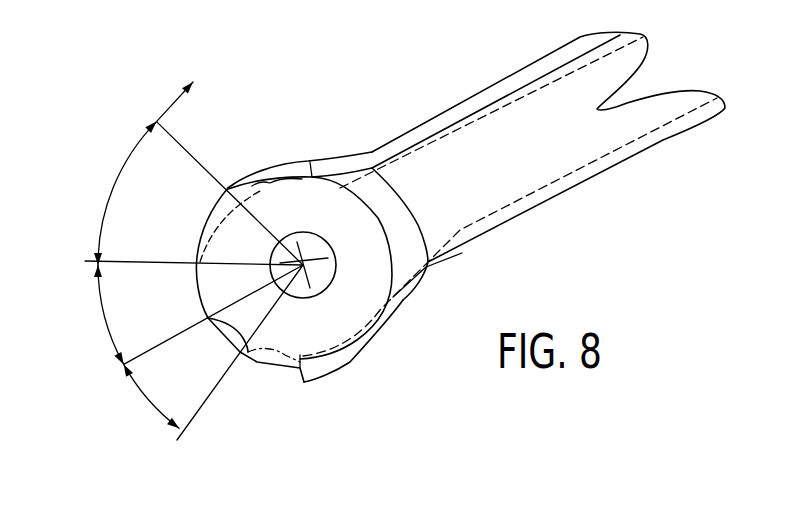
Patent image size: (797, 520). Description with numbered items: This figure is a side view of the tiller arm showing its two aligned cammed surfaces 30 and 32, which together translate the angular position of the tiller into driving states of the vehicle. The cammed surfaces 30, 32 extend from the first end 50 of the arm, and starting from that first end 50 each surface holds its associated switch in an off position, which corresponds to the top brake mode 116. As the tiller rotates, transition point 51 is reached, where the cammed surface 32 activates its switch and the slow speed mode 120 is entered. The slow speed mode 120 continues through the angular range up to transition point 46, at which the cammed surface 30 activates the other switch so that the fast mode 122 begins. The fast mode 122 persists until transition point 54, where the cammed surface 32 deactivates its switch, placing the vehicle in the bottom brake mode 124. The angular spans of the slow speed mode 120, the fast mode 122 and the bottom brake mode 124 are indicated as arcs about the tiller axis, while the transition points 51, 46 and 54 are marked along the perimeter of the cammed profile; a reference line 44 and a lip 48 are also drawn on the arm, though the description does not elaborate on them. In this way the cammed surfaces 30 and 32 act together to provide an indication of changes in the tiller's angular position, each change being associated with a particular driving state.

The cammed surface 30 is at (206, 346).
The cammed surface 32 is at (187, 228).
The reference line 44 is at (207, 402).
The transition point 46 is at (96, 260).
The lower lip 48 is at (319, 412).
The first end 50 is at (282, 136).
The transition point 51 is at (152, 120).
The transition point 54 is at (118, 367).
The top brake mode 116 is at (172, 106).
The slow speed mode 120 is at (113, 183).
The fast mode 122 is at (102, 316).
The bottom brake mode 124 is at (148, 403).